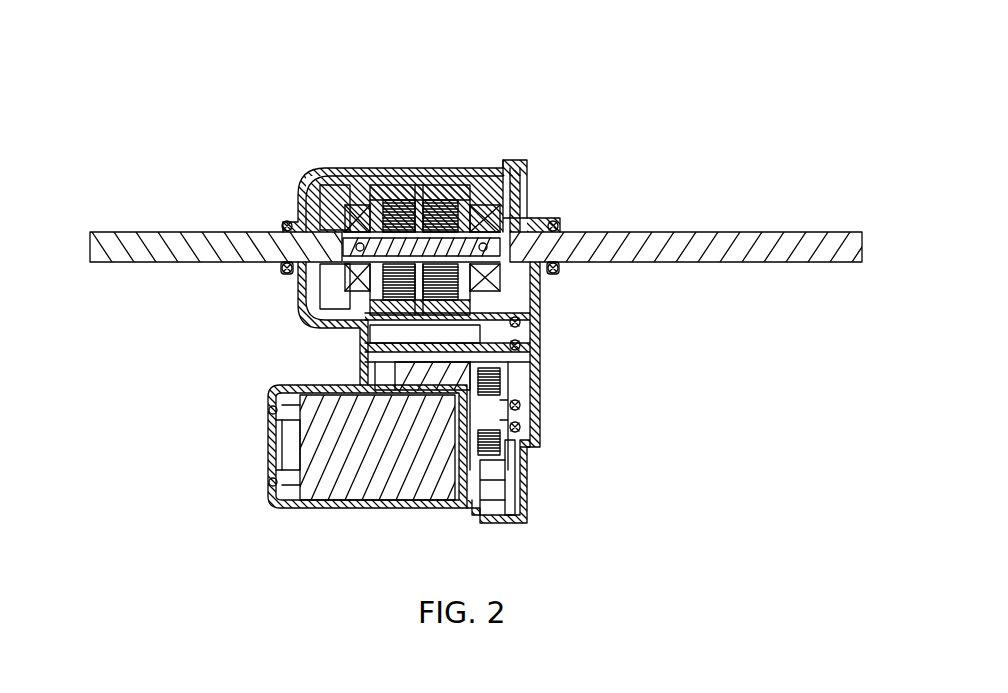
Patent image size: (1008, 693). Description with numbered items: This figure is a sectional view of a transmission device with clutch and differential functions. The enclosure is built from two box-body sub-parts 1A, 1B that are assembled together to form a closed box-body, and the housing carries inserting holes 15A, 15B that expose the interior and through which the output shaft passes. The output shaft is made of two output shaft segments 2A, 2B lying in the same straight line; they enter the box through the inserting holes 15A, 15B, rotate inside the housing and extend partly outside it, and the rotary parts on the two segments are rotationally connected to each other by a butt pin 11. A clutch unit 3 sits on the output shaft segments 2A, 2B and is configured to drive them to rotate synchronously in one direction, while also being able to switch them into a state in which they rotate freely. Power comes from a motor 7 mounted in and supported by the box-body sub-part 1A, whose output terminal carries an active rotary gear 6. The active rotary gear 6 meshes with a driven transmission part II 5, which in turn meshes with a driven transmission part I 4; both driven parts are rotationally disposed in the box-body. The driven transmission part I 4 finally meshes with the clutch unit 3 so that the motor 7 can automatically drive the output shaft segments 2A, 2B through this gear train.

The box-body sub-part 1A is at (297, 382).
The box-body sub-part 1B is at (530, 217).
The output shaft segment 2A is at (172, 234).
The output shaft segment 2B is at (737, 250).
The clutch unit 3 is at (365, 183).
The driven transmission part I 4 is at (497, 333).
The driven transmission part II 5 is at (525, 410).
The active rotary gear 6 is at (528, 458).
The motor 7 is at (293, 450).
The butt pin 11 is at (425, 183).
The inserting hole 15A is at (563, 227).
The inserting hole 15B is at (282, 220).